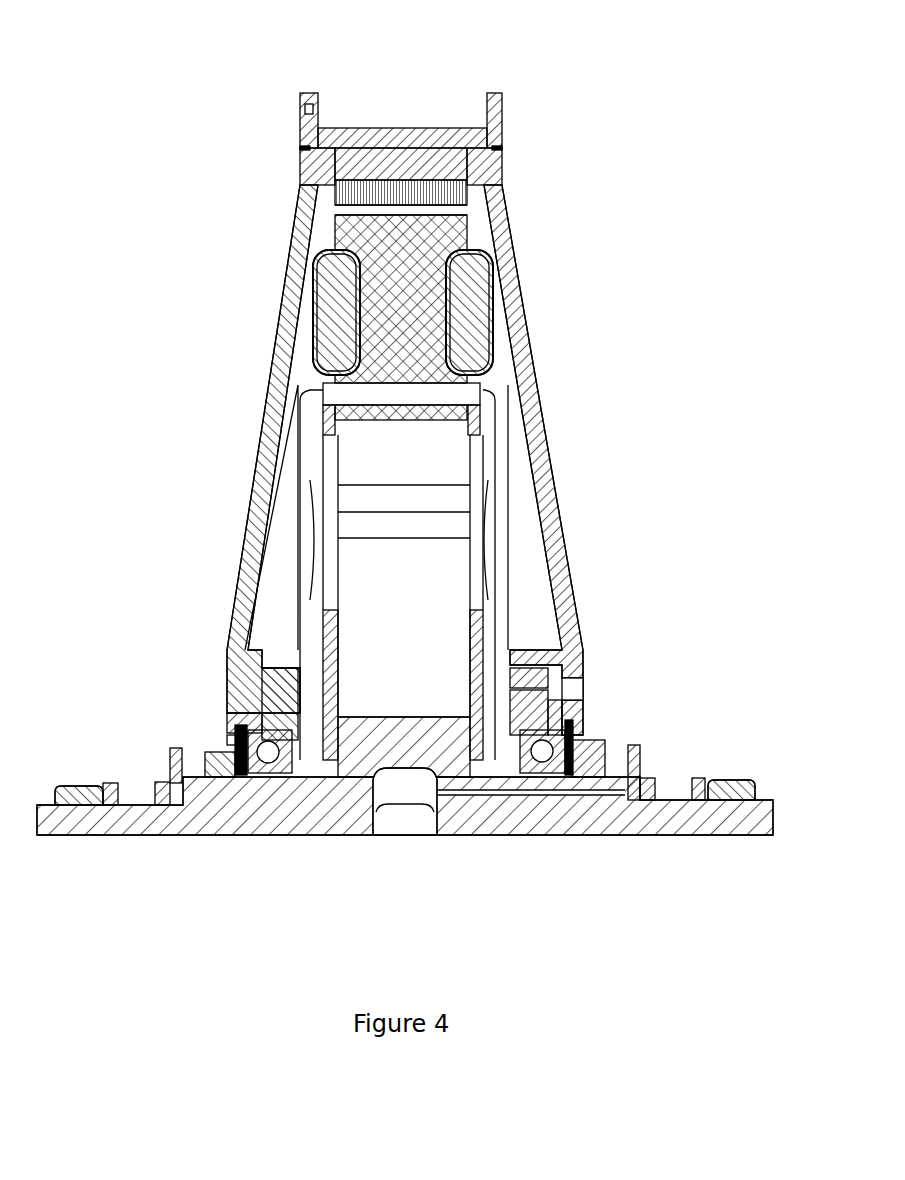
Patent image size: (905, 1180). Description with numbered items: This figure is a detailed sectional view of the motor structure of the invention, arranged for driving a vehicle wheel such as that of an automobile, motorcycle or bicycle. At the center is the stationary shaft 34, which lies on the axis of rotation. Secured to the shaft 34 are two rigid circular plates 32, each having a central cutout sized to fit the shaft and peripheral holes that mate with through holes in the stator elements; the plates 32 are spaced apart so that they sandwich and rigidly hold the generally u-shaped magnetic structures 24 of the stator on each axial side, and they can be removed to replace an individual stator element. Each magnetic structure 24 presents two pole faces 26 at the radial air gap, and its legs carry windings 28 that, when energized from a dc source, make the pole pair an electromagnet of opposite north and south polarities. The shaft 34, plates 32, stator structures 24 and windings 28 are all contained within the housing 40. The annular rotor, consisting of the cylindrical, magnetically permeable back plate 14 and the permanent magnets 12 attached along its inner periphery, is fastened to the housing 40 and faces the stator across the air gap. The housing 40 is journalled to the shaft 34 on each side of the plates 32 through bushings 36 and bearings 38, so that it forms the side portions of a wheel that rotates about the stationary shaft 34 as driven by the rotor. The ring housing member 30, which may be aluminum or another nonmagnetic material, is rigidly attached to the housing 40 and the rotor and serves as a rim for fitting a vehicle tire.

The permanent magnets 12 is at (497, 148).
The back plate 14 is at (358, 160).
The u-shaped magnetic structure 24 is at (432, 370).
The pole faces 26 is at (430, 185).
The windings 28 is at (480, 290).
The ring housing member 30 is at (440, 130).
The plates 32 is at (325, 655).
The shaft 34 is at (258, 805).
The bushings 36 is at (570, 688).
The bearings 38 is at (540, 708).
The housing 40 is at (555, 577).